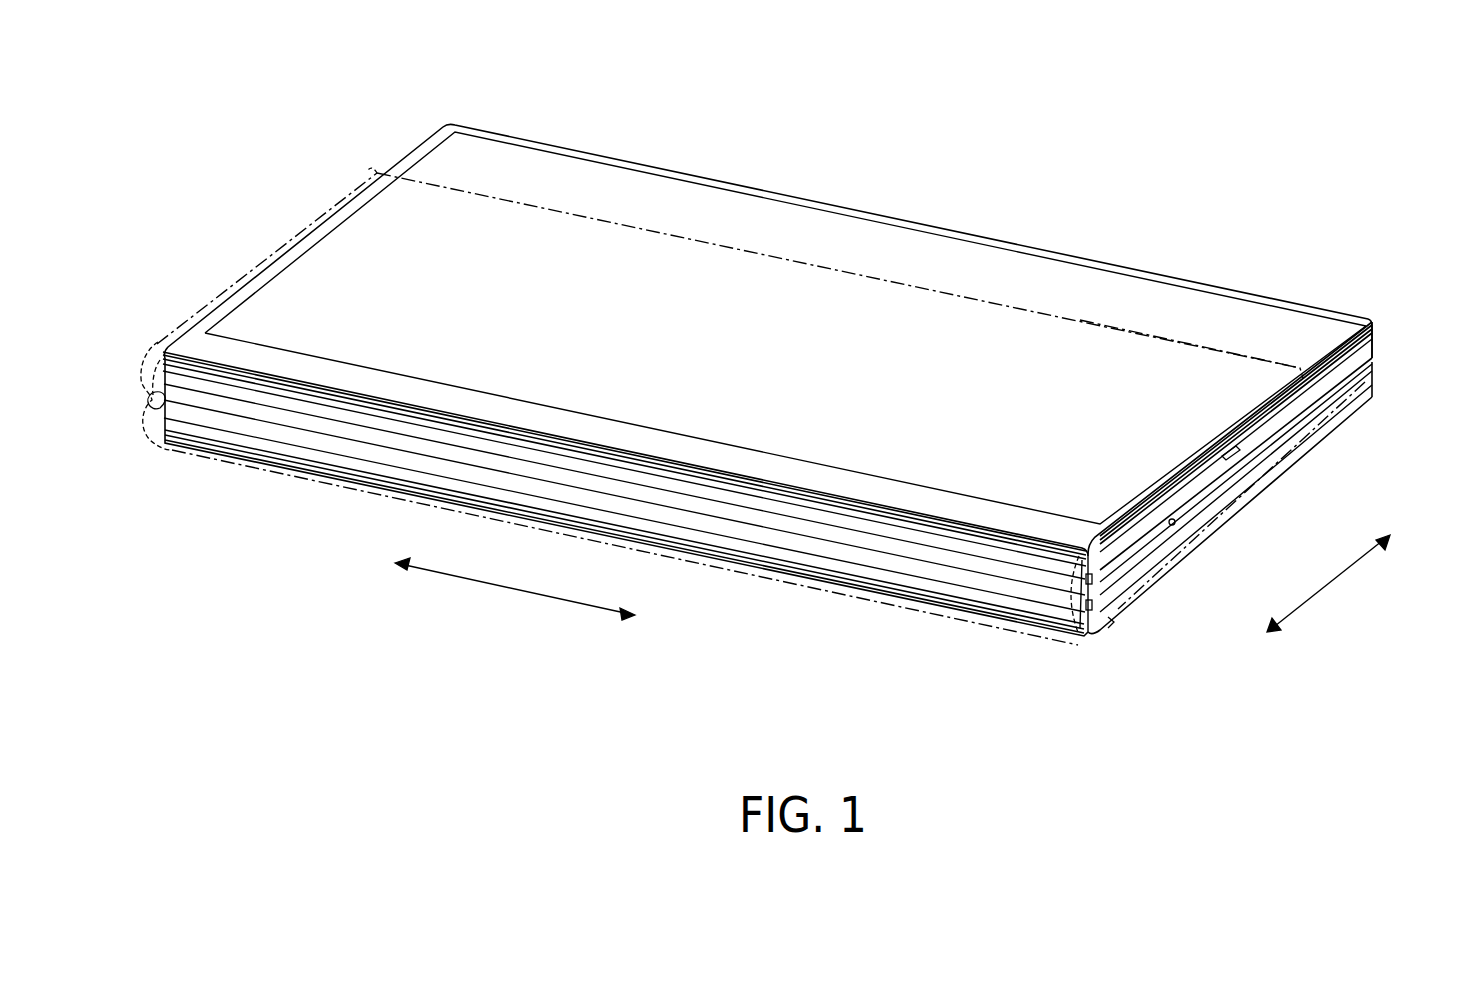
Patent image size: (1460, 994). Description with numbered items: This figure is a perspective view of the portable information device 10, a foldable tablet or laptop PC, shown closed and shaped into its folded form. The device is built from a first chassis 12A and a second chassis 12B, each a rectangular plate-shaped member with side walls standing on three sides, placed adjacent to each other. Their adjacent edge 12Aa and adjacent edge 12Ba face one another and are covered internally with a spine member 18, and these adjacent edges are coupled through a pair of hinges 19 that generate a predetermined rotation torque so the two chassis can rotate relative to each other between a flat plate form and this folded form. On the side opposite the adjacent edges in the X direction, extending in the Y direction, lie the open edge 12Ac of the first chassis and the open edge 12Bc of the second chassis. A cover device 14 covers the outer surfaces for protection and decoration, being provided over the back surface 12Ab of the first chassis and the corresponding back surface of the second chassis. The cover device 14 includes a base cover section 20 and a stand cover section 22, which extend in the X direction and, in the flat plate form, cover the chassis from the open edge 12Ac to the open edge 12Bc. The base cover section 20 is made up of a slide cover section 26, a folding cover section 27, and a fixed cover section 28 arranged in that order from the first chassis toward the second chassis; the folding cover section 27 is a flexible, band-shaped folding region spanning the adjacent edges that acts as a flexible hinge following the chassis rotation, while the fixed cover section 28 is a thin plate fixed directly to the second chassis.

The portable information device 10 is at (219, 203).
The first chassis 12A is at (1143, 530).
The adjacent edge of the first chassis 12Aa is at (1106, 600).
The back surface of the first chassis 12Ab is at (688, 268).
The open edge of the first chassis 12Ac is at (1374, 338).
The second chassis 12B is at (1197, 528).
The adjacent edge of the second chassis 12Ba is at (1080, 632).
The open edge of the second chassis 12Bc is at (1373, 365).
The cover device 14 is at (533, 207).
The spine member 18 is at (785, 542).
The hinge 19 is at (152, 400).
The base cover section 20 is at (1093, 322).
The stand cover section 22 is at (1333, 430).
The slide cover section 26 is at (1190, 344).
The folding cover section 27 is at (155, 370).
The fixed cover section 28 is at (1112, 623).